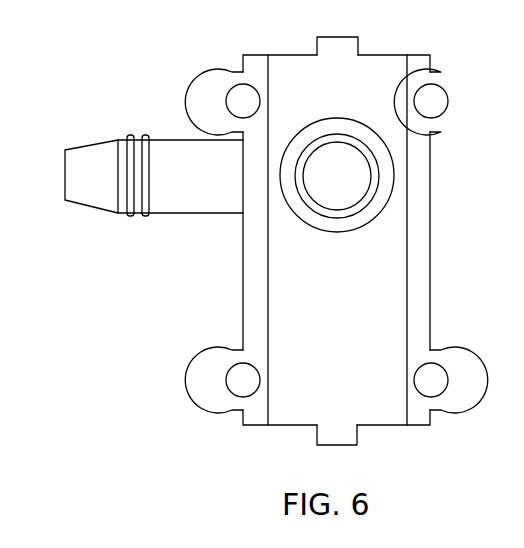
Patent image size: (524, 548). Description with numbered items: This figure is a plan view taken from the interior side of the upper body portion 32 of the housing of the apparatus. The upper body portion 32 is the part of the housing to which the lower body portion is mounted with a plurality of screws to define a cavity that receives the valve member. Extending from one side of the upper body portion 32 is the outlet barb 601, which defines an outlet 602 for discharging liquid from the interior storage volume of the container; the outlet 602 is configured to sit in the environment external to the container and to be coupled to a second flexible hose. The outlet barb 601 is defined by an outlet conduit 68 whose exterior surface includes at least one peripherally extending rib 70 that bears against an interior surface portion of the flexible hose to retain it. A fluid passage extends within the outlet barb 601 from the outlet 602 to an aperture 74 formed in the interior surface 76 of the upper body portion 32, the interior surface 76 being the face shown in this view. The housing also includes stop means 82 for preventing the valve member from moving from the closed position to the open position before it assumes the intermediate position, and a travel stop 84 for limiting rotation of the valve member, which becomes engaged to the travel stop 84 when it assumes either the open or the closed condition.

The upper body portion 32 is at (243, 290).
The outlet conduit 68 is at (178, 214).
The peripherally extending rib 70 is at (146, 216).
The aperture 74 is at (313, 156).
The interior surface 76 is at (288, 90).
The stop means 82 is at (378, 38).
The travel stop 84 is at (340, 37).
The outlet barb 601 is at (170, 115).
The outlet 602 is at (65, 173).